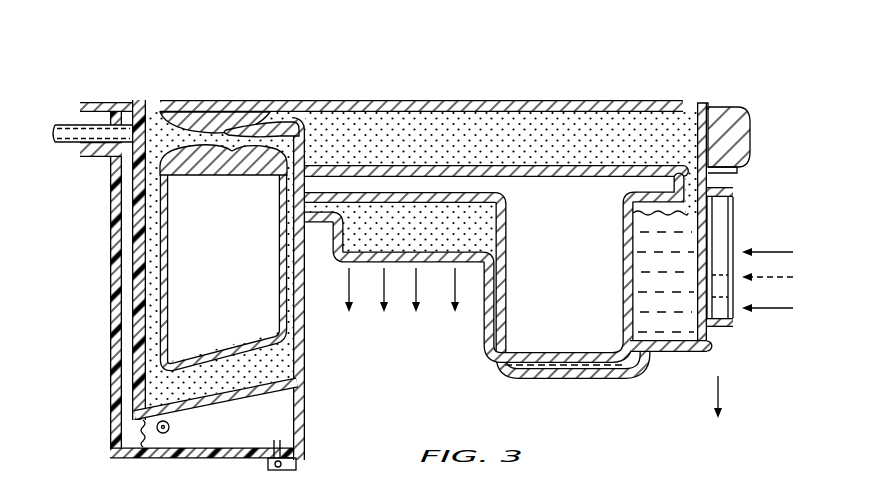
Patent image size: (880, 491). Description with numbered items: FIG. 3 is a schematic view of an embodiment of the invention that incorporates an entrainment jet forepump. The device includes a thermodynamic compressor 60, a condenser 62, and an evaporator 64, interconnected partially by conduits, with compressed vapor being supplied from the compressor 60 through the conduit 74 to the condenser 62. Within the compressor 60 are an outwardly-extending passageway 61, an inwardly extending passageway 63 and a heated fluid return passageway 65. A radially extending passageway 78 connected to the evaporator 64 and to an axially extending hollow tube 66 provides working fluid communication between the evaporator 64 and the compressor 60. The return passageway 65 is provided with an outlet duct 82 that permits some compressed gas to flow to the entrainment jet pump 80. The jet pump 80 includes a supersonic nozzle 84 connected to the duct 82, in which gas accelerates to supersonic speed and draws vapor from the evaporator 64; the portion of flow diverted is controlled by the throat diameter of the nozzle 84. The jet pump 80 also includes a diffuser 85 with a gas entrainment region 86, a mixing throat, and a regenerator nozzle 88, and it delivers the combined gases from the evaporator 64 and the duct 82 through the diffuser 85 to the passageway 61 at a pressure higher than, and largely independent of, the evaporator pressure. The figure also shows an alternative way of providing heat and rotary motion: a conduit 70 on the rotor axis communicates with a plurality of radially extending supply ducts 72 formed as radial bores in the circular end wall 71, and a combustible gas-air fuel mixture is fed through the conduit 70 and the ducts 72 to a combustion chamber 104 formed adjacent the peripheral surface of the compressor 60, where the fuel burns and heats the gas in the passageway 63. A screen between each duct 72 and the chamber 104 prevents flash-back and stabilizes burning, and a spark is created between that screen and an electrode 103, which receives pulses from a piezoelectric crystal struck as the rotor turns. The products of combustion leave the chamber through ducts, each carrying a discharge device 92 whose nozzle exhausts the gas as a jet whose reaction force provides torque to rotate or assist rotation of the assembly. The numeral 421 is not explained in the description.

The thermodynamic compressor 60 is at (175, 280).
The outwardly-extending passageway 61 is at (152, 297).
The condenser 62 is at (343, 266).
The inwardly extending passageway 63 is at (228, 370).
The evaporator 64 is at (549, 263).
The heated fluid return passageway 65 is at (288, 258).
The axially extending hollow tube 66 is at (582, 100).
The conduit 70 is at (74, 143).
The circular end wall 71 is at (110, 230).
The radially extending supply ducts 72 is at (130, 300).
The conduit 74 is at (322, 226).
The radially extending passageway 78 is at (693, 185).
The entrainment jet pump 80 is at (223, 112).
The outlet duct 82 is at (295, 183).
The supersonic nozzle 84 is at (266, 120).
The diffuser 85 is at (193, 110).
The gas entrainment region 86 is at (236, 122).
The regenerator nozzle 88 is at (158, 118).
The discharge device 92 is at (290, 469).
The electrode 103 is at (163, 434).
The combustion chamber 104 is at (280, 402).
The heat exchanger assembly 421 is at (670, 86).